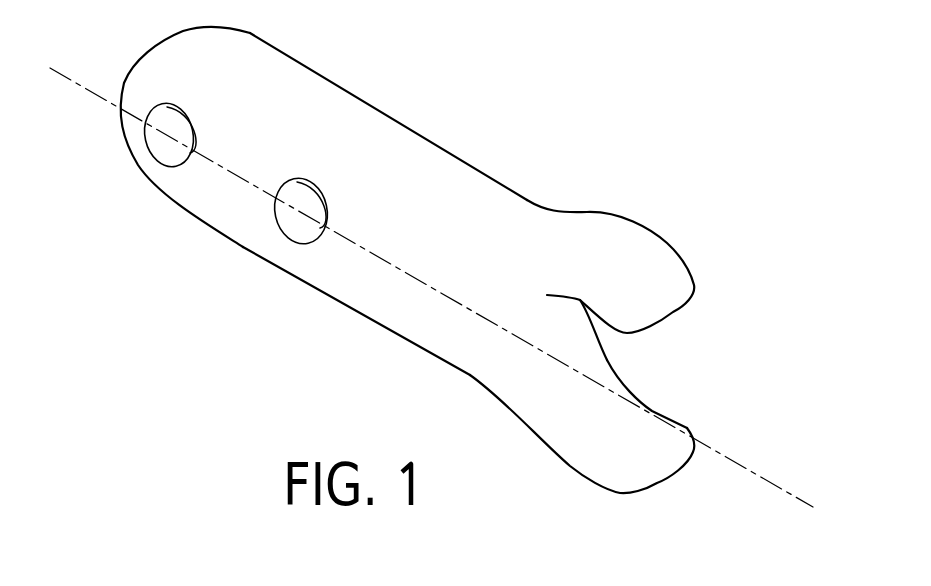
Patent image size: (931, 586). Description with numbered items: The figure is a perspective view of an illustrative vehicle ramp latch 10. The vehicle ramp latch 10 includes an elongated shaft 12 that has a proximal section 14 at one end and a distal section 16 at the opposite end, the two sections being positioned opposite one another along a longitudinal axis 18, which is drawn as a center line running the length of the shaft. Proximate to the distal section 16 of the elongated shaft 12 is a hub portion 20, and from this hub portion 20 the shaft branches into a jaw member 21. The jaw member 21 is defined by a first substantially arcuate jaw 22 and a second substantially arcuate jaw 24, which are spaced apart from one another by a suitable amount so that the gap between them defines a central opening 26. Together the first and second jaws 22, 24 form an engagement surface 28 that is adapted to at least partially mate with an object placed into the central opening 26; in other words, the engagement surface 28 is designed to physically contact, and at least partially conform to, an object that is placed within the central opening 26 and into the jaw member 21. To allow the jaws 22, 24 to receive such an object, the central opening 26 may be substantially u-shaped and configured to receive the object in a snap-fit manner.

The vehicle ramp latch 10 is at (553, 88).
The elongated shaft 12 is at (278, 268).
The proximal section 14 is at (168, 65).
The distal section 16 is at (550, 377).
The longitudinal axis 18 is at (787, 497).
The hub portion 20 is at (503, 338).
The jaw member 21 is at (696, 329).
The first substantially arcuate jaw 22 is at (647, 245).
The second substantially arcuate jaw 24 is at (647, 475).
The central opening 26 is at (698, 406).
The engagement surface 28 is at (603, 411).